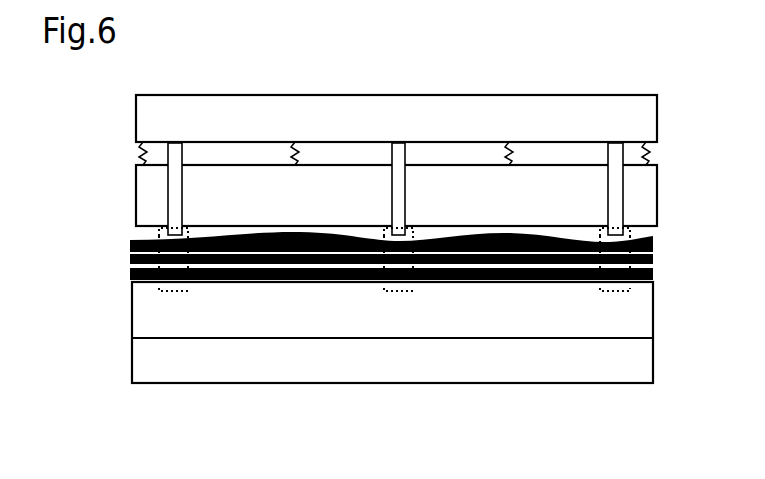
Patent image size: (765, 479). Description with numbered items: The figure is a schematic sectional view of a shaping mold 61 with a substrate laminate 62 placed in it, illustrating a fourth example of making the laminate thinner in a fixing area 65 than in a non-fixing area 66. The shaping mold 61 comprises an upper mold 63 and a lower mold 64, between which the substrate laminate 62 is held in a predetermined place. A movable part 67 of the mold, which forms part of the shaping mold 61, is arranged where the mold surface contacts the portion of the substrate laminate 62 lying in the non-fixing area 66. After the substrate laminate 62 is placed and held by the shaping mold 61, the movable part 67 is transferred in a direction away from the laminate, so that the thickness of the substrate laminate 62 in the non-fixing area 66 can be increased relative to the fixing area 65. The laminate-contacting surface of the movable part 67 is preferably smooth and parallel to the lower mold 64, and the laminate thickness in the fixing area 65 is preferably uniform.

The shaping mold 61 is at (78, 376).
The substrate laminate 62 is at (127, 293).
The upper mold 63 is at (153, 196).
The lower mold 64 is at (152, 322).
The fixing area 65 is at (178, 292).
The non-fixing area 66 is at (283, 290).
The movable part of mold 67 is at (143, 132).